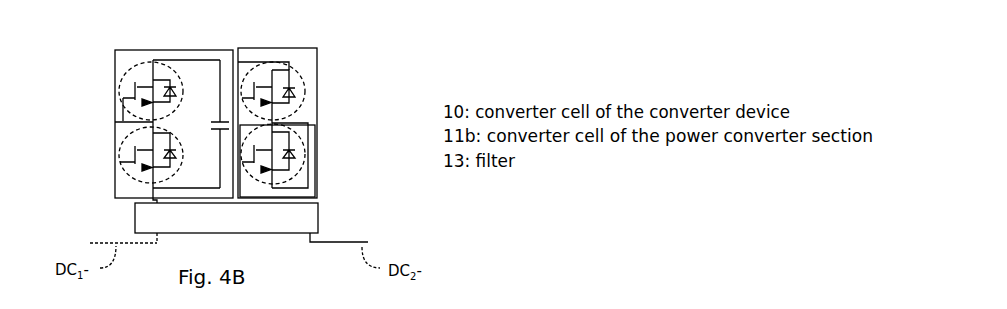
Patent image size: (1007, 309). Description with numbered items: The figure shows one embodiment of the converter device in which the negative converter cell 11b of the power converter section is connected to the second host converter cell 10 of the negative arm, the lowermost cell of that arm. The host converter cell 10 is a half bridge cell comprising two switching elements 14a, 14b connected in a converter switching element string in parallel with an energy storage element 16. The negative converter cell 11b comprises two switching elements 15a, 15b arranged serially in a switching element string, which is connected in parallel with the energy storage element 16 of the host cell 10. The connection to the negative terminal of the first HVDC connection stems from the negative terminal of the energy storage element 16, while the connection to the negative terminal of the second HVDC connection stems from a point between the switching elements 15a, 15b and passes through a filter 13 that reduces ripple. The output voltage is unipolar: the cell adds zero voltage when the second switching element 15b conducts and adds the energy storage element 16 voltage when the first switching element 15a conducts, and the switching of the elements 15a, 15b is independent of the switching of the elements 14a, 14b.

The host converter cell 10 is at (131, 126).
The negative converter cell 11b is at (316, 134).
The filter 13 is at (239, 229).
The first switching element 14a is at (115, 122).
The second switching element 14b is at (183, 160).
The first cell switching element 15a is at (305, 100).
The second cell switching element 15b is at (304, 165).
The energy storage element 16 is at (210, 118).